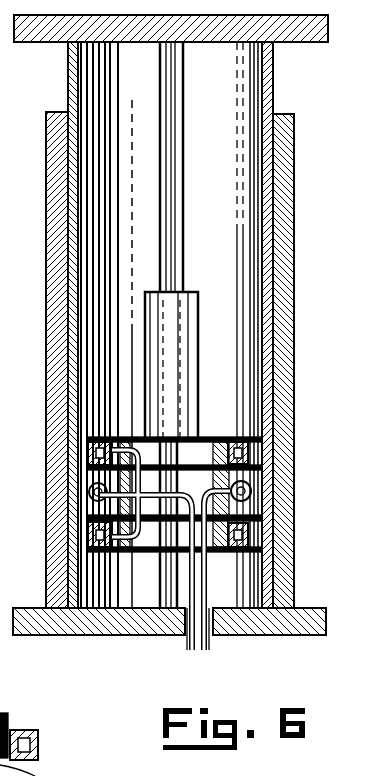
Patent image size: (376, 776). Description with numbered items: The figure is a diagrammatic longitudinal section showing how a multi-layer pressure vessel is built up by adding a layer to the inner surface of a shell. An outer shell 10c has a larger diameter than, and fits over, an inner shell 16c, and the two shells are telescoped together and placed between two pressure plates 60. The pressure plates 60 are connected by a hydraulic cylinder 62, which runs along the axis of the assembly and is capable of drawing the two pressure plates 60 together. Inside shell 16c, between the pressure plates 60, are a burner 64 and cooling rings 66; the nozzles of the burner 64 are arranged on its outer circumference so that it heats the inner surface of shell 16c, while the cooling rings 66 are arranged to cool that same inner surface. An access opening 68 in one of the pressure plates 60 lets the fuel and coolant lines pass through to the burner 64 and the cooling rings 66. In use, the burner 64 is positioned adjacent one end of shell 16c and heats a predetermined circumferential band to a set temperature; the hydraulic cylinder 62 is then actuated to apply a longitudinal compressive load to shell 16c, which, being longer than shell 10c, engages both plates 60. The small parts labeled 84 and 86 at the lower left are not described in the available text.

The pressure plate 60 is at (287, 45).
The shell 10c is at (283, 336).
The shell 16c is at (268, 300).
The hydraulic cylinder 62 is at (152, 290).
The burner 64 is at (205, 437).
The cooling rings 66 is at (232, 437).
The access opening 68 is at (219, 627).
The bar 84 is at (1, 706).
The block 86 is at (38, 750).